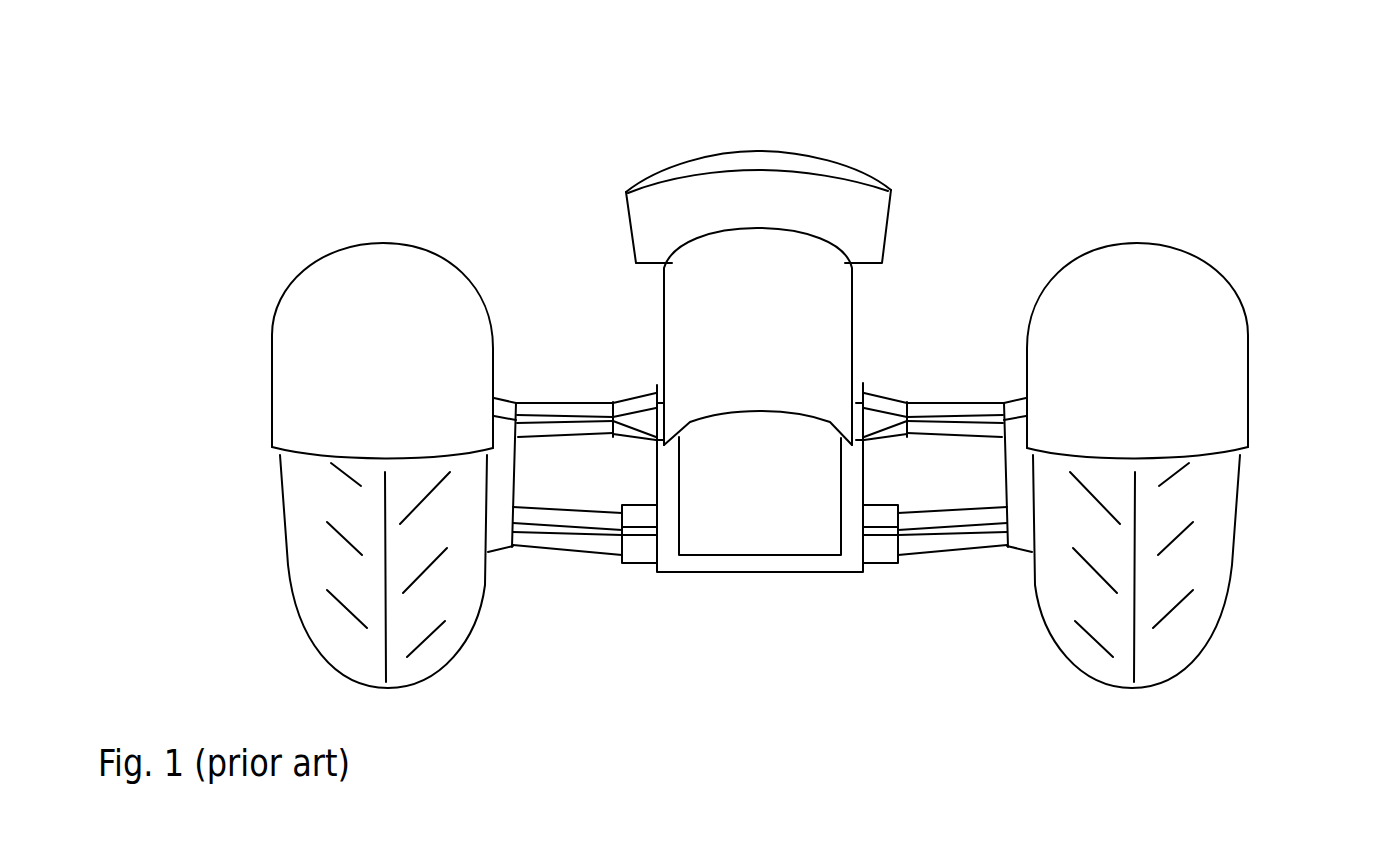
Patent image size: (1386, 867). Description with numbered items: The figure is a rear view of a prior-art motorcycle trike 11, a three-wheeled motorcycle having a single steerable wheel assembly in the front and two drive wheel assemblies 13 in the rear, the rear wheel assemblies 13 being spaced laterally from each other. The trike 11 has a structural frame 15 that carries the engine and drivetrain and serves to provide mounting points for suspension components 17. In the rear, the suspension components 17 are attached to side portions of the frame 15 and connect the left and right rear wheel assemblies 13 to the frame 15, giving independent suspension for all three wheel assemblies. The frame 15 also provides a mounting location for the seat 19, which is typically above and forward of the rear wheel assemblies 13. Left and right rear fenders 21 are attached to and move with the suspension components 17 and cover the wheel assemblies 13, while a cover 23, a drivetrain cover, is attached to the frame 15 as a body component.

The trike 11 is at (949, 178).
The rear wheel assemblies 13 is at (308, 578).
The frame 15 is at (686, 565).
The suspension components 17 is at (568, 408).
The seat 19 is at (730, 165).
The rear fenders 21 is at (298, 377).
The cover 23 is at (813, 315).